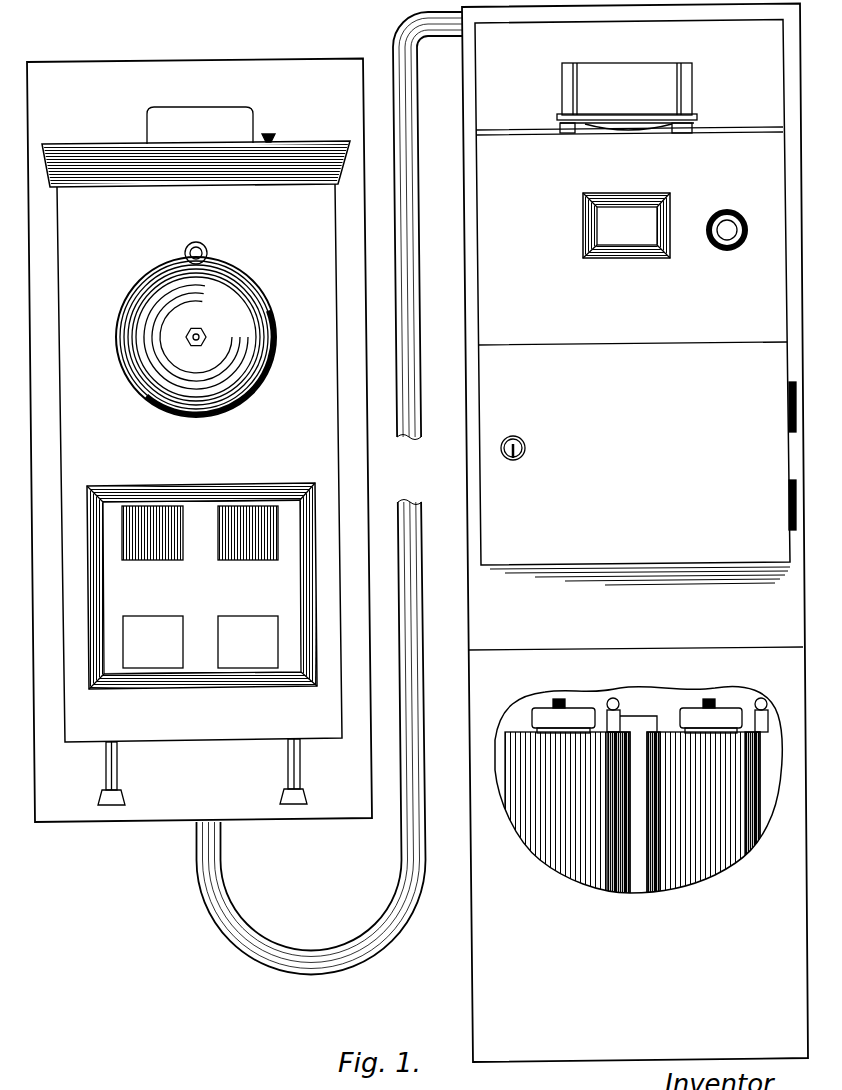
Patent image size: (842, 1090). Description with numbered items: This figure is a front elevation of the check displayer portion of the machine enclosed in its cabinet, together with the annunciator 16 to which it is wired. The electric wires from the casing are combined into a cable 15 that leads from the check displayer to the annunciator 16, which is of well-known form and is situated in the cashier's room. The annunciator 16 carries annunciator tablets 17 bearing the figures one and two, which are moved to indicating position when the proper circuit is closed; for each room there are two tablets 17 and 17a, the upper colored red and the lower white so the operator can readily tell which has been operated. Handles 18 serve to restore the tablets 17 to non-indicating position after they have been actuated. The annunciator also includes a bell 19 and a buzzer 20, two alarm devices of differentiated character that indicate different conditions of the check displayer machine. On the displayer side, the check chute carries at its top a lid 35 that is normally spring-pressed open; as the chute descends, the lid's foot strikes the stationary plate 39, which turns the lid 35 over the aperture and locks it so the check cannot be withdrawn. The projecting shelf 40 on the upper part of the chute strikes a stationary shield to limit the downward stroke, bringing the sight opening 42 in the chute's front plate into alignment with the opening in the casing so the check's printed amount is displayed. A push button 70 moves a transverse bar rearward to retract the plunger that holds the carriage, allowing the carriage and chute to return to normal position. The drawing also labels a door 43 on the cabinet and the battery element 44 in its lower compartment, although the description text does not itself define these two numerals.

The cable 15 is at (410, 366).
The annunciator 16 is at (88, 115).
The annunciator tablets 17 is at (176, 557).
The annunciator tablet 17a is at (205, 609).
The handles 18 is at (150, 772).
The bell 19 is at (197, 403).
The buzzer 20 is at (194, 116).
The lid 35 is at (620, 113).
The stationary plate 39 is at (623, 70).
The projecting shelf 40 is at (748, 84).
The sight opening 42 is at (560, 229).
The door 43 is at (650, 459).
The batteries / readout 44 is at (650, 286).
The push button 70 is at (727, 240).